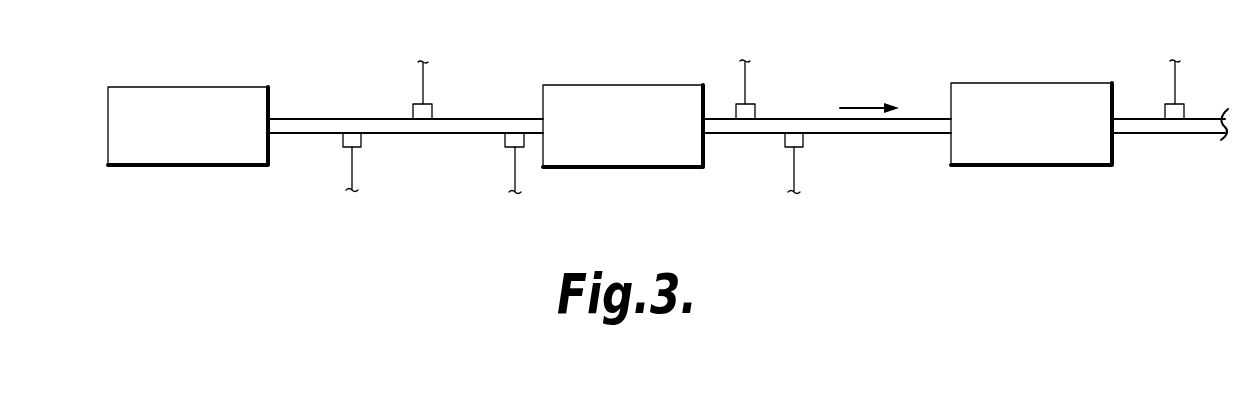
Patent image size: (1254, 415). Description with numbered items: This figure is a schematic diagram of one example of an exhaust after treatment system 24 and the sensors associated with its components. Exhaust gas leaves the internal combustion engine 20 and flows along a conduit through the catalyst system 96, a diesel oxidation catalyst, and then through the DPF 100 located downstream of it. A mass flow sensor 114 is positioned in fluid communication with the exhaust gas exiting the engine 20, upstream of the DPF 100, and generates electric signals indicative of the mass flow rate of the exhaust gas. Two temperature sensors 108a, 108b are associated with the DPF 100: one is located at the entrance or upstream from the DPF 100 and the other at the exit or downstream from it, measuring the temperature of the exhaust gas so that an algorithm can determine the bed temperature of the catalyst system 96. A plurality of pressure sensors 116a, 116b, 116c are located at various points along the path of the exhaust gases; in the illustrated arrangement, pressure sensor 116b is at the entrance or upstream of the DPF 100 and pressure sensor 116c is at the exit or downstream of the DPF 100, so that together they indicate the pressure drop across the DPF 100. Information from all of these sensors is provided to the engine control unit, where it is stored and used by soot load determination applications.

The internal combustion engine 20 is at (163, 87).
The exhaust after treatment system 24 is at (879, 65).
The catalyst system (DOC) 96 is at (623, 85).
The DPF 100 is at (1043, 83).
The mass flow sensor 114 is at (361, 147).
The pressure sensor 116a is at (423, 103).
The pressure sensor 116b is at (745, 103).
The pressure sensor 116c is at (1175, 103).
The temperature sensor 108a is at (524, 147).
The temperature sensor 108b is at (803, 147).